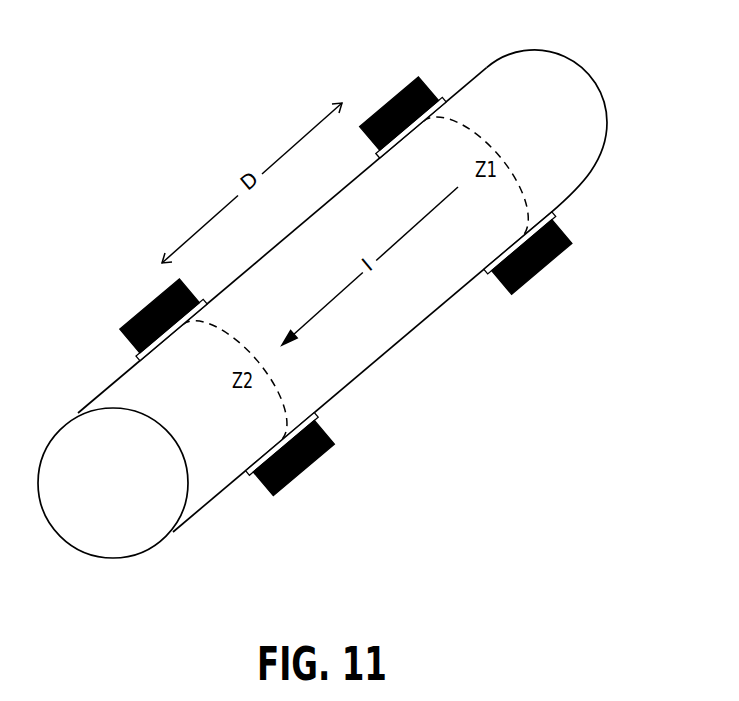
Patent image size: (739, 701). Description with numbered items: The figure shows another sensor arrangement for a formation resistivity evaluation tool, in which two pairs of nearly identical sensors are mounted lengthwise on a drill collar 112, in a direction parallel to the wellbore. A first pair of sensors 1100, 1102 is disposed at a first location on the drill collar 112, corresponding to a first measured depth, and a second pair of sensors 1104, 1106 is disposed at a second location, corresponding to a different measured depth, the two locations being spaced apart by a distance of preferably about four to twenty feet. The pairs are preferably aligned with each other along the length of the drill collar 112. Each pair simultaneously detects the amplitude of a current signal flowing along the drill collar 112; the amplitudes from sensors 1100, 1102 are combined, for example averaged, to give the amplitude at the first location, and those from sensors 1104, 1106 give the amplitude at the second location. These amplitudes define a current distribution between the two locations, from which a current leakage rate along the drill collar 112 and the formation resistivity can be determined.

The drill collar 112 is at (585, 73).
The first sensor of the first pair 1100 is at (413, 79).
The second sensor of the first pair 1102 is at (540, 270).
The first sensor of the second pair 1104 is at (120, 333).
The second sensor of the second pair 1106 is at (303, 472).